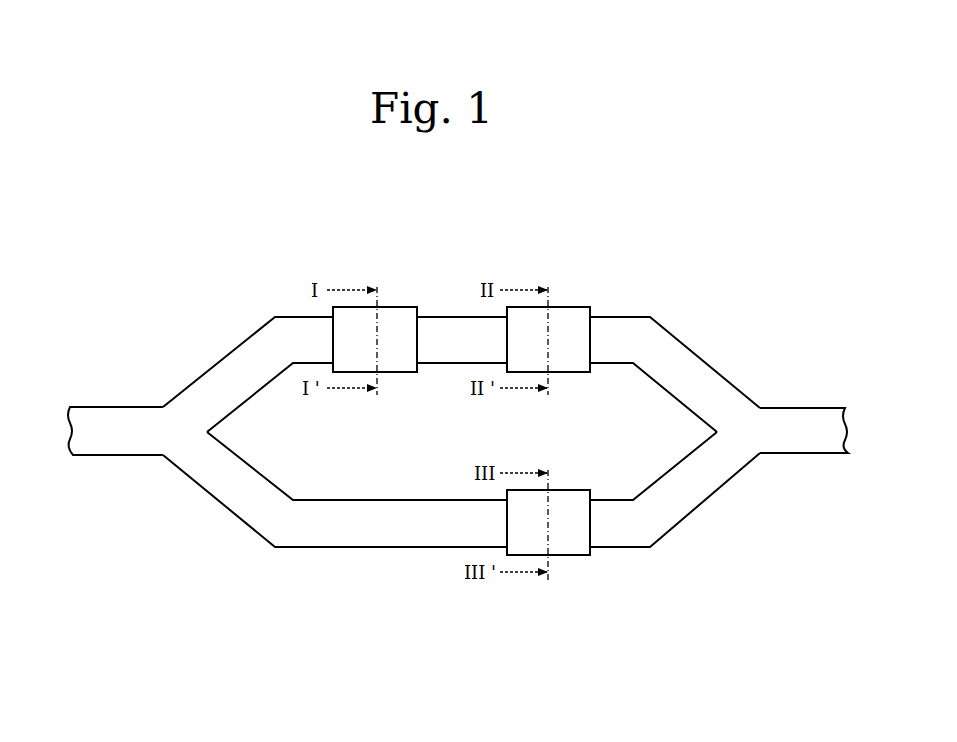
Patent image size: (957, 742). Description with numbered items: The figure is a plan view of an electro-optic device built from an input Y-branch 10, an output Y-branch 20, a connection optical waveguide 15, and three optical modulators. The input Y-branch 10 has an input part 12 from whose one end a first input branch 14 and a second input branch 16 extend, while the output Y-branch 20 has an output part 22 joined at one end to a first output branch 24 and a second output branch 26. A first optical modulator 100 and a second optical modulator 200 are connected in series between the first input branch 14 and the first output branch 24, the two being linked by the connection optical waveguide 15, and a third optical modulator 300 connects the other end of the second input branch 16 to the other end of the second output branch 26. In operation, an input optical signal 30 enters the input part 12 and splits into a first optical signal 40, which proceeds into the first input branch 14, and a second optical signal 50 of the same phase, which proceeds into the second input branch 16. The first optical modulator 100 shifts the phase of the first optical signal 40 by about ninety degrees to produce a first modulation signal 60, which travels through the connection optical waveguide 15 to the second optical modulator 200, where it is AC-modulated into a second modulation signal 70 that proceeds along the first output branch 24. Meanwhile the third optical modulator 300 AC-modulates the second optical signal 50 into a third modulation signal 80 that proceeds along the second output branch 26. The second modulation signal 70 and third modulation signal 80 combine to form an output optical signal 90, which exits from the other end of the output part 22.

The input Y-branch 10 is at (203, 302).
The input part 12 is at (123, 417).
The first input branch 14 is at (217, 370).
The second input branch 16 is at (243, 473).
The connection optical waveguide 15 is at (453, 325).
The output Y-branch 20 is at (842, 302).
The output part 22 is at (801, 418).
The first output branch 24 is at (703, 370).
The second output branch 26 is at (680, 473).
The input optical signal 30 is at (140, 439).
The first optical signal 40 is at (288, 350).
The second optical signal 50 is at (360, 533).
The first modulation signal 60 is at (497, 352).
The second modulation signal 70 is at (700, 390).
The third modulation signal 80 is at (700, 470).
The output optical signal 90 is at (820, 439).
The first optical modulator 100 is at (398, 307).
The second optical modulator 200 is at (570, 307).
The third optical modulator 300 is at (570, 555).